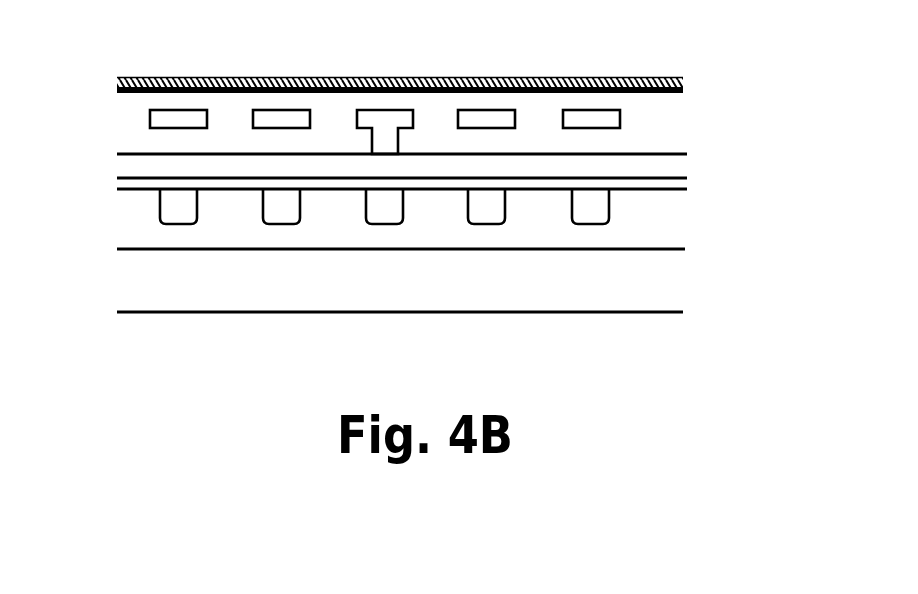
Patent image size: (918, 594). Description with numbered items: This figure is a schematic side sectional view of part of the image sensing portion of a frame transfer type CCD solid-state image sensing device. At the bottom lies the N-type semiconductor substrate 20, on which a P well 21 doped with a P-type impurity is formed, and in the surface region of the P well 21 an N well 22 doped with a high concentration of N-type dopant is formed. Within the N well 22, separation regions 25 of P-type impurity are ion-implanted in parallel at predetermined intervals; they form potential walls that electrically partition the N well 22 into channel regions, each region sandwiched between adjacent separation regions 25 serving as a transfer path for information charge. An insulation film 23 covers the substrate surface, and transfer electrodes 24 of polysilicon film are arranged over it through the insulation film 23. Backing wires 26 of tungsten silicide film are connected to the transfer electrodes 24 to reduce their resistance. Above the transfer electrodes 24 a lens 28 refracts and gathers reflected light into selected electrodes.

The N-type semiconductor substrate 20 is at (677, 350).
The P well 21 is at (677, 284).
The N well 22 is at (677, 234).
The insulation film 23 is at (681, 185).
The transfer electrodes 24 is at (677, 166).
The separation region 25 is at (180, 216).
The backing wires 26 is at (177, 123).
The lens 28 is at (681, 83).